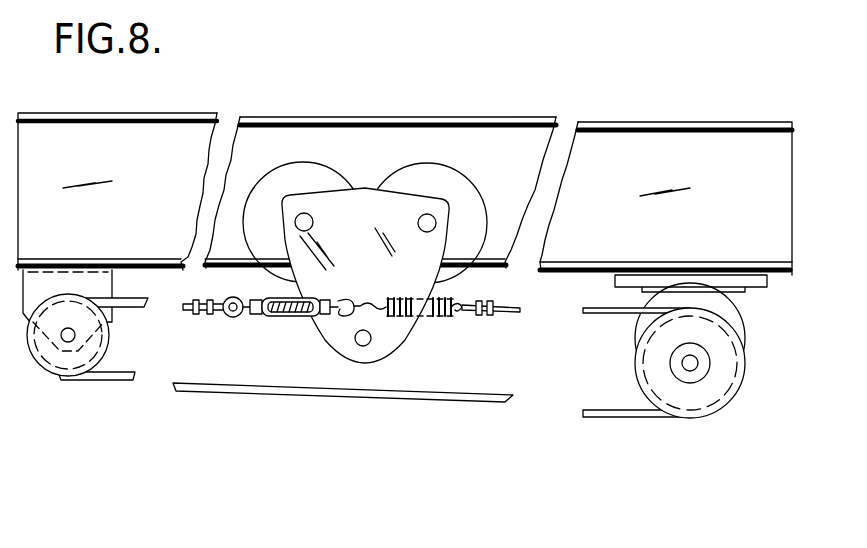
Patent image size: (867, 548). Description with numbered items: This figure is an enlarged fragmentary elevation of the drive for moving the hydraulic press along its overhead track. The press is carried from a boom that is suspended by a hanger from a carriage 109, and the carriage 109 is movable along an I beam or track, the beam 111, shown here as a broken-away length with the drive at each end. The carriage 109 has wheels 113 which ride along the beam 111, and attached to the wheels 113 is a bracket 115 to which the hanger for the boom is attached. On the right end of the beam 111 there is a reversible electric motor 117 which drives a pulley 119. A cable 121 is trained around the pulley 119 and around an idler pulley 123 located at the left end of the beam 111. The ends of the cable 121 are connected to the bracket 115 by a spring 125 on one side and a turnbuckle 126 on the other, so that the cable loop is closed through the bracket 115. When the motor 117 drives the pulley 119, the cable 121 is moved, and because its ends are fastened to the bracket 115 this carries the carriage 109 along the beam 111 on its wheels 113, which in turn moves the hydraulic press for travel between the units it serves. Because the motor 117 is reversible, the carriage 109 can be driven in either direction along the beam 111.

The carriage 109 is at (366, 185).
The beam 111 is at (383, 92).
The wheels 113 is at (302, 163).
The bracket 115 is at (403, 334).
The reversible electric motor 117 is at (723, 313).
The pulley 119 is at (690, 419).
The cable 121 is at (280, 389).
The idler pulley 123 is at (70, 377).
The spring 125 is at (460, 325).
The turnbuckle 126 is at (262, 318).